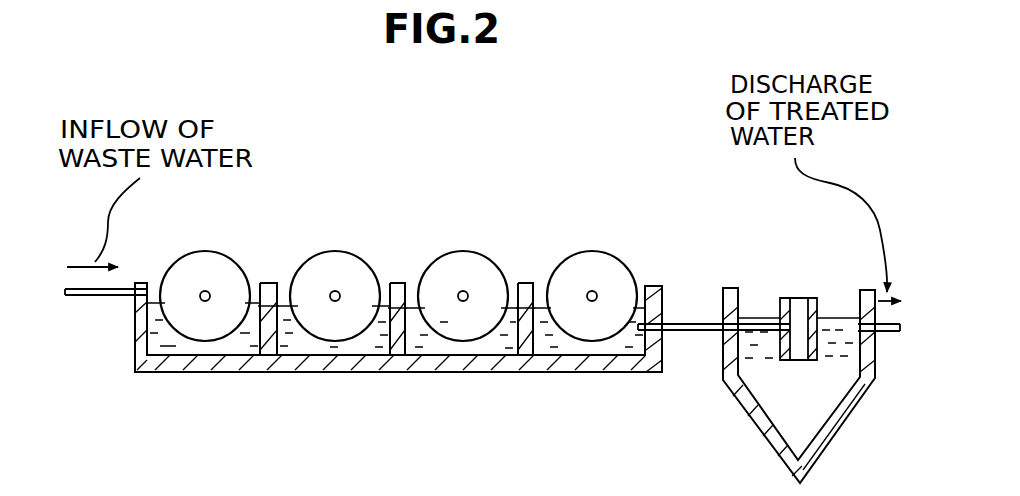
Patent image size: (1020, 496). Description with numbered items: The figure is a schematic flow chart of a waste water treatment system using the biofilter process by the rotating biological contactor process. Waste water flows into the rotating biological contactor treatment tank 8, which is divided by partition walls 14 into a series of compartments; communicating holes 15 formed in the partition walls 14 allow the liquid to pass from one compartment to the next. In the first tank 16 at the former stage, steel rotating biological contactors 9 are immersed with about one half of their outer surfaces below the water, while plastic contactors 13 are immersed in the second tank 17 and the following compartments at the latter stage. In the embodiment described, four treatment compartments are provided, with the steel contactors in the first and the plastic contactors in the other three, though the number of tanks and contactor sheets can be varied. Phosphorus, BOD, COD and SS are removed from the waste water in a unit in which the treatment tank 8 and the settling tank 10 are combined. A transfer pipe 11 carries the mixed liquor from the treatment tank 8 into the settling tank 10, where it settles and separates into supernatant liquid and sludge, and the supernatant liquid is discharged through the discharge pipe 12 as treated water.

The rotating biological contactor treatment tank 8 is at (612, 352).
The steel rotating biological contactors 9 is at (230, 256).
The settling tank 10 is at (866, 290).
The transfer pipe 11 is at (684, 320).
The discharge pipe 12 is at (883, 335).
The plastic contactors 13 is at (559, 262).
The partition walls 14 is at (270, 318).
The communicating holes 15 is at (505, 316).
The first tank 16 is at (150, 340).
The second tank 17 is at (289, 345).